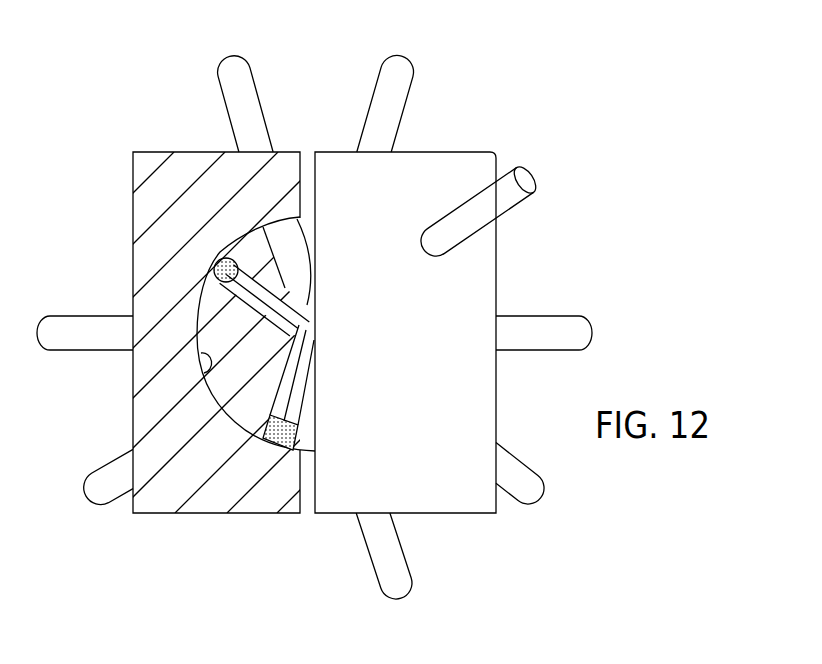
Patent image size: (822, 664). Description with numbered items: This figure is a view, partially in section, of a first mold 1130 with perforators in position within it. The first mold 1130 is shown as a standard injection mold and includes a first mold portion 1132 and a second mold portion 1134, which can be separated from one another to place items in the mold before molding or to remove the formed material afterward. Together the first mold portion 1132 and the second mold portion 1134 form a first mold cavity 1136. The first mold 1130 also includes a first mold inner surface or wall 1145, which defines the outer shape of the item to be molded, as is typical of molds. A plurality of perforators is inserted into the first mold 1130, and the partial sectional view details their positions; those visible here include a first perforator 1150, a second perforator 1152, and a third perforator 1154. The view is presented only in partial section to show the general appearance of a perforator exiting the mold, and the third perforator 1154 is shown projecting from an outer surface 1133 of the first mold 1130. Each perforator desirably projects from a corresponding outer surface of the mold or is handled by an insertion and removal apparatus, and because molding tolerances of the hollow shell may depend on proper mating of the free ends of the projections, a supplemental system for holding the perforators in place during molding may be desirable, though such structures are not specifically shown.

The first mold 1130 is at (311, 100).
The first mold portion 1132 is at (453, 165).
The outer surface 1133 is at (430, 328).
The second mold portion 1134 is at (150, 158).
The first mold cavity 1136 is at (252, 415).
The first mold inner surface 1145 is at (203, 357).
The first perforator 1150 is at (233, 286).
The second perforator 1152 is at (306, 455).
The third perforator 1154 is at (518, 205).